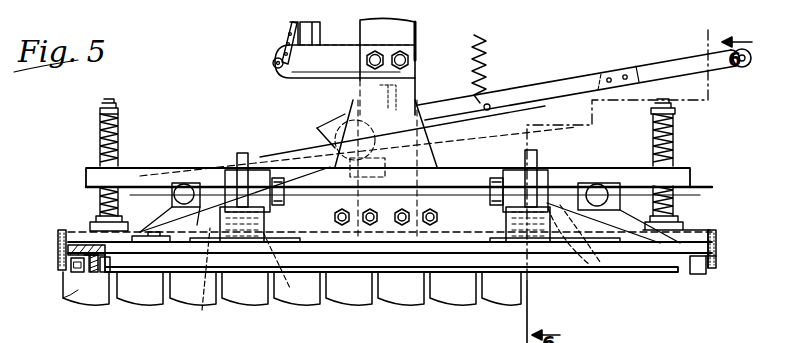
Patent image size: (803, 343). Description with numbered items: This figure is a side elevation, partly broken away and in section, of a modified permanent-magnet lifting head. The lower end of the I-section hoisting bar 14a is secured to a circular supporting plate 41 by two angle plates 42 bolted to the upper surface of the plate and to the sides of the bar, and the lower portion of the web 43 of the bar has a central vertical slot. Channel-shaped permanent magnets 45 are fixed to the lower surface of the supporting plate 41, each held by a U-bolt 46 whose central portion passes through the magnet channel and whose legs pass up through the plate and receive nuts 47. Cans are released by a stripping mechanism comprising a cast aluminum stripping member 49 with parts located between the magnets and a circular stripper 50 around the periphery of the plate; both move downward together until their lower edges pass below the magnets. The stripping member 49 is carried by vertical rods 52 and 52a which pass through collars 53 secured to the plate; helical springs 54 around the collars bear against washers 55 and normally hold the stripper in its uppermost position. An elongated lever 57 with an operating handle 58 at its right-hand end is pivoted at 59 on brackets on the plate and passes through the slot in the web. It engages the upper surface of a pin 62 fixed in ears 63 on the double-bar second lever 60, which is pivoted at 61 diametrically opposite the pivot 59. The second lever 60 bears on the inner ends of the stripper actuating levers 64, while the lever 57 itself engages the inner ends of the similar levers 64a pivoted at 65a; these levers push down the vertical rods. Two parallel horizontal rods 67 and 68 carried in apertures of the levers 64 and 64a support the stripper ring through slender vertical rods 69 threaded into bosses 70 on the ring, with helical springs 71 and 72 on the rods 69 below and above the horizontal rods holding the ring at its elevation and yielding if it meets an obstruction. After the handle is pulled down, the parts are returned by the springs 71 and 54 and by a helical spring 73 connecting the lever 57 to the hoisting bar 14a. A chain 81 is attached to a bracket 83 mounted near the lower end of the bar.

The hoisting bar 14a is at (420, 88).
The circular supporting plate 41 is at (665, 243).
The angle plates 42 is at (474, 222).
The web 43 is at (372, 102).
The permanent magnets 45 is at (73, 272).
The U-bolt 46 is at (76, 272).
The nuts 47 is at (58, 235).
The stripping member 49 is at (95, 272).
The circular stripper 50 is at (66, 253).
The vertical rods 52 is at (566, 268).
The vertical rods 52a is at (216, 282).
The collars 53 is at (508, 245).
The helical springs 54 is at (270, 244).
The washers 55 is at (586, 246).
The elongated lever 57 is at (558, 84).
The operating handle 58 is at (684, 48).
The pivot 59 is at (172, 196).
The second lever 60 is at (456, 158).
The pivot 61 is at (598, 190).
The pin 62 is at (352, 131).
The ears 63 is at (385, 168).
The stripper actuating levers 64 is at (531, 150).
The stripper actuating levers 64a is at (258, 142).
The pivot 65a is at (290, 196).
The horizontal rod 67 is at (197, 176).
The horizontal rod 68 is at (152, 176).
The vertical rods 69 is at (113, 106).
The bosses 70 is at (94, 224).
The helical springs 71 is at (100, 198).
The helical springs 72 is at (102, 140).
The helical spring 73 is at (487, 60).
The chain 81 is at (281, 44).
The bracket 83 is at (315, 56).